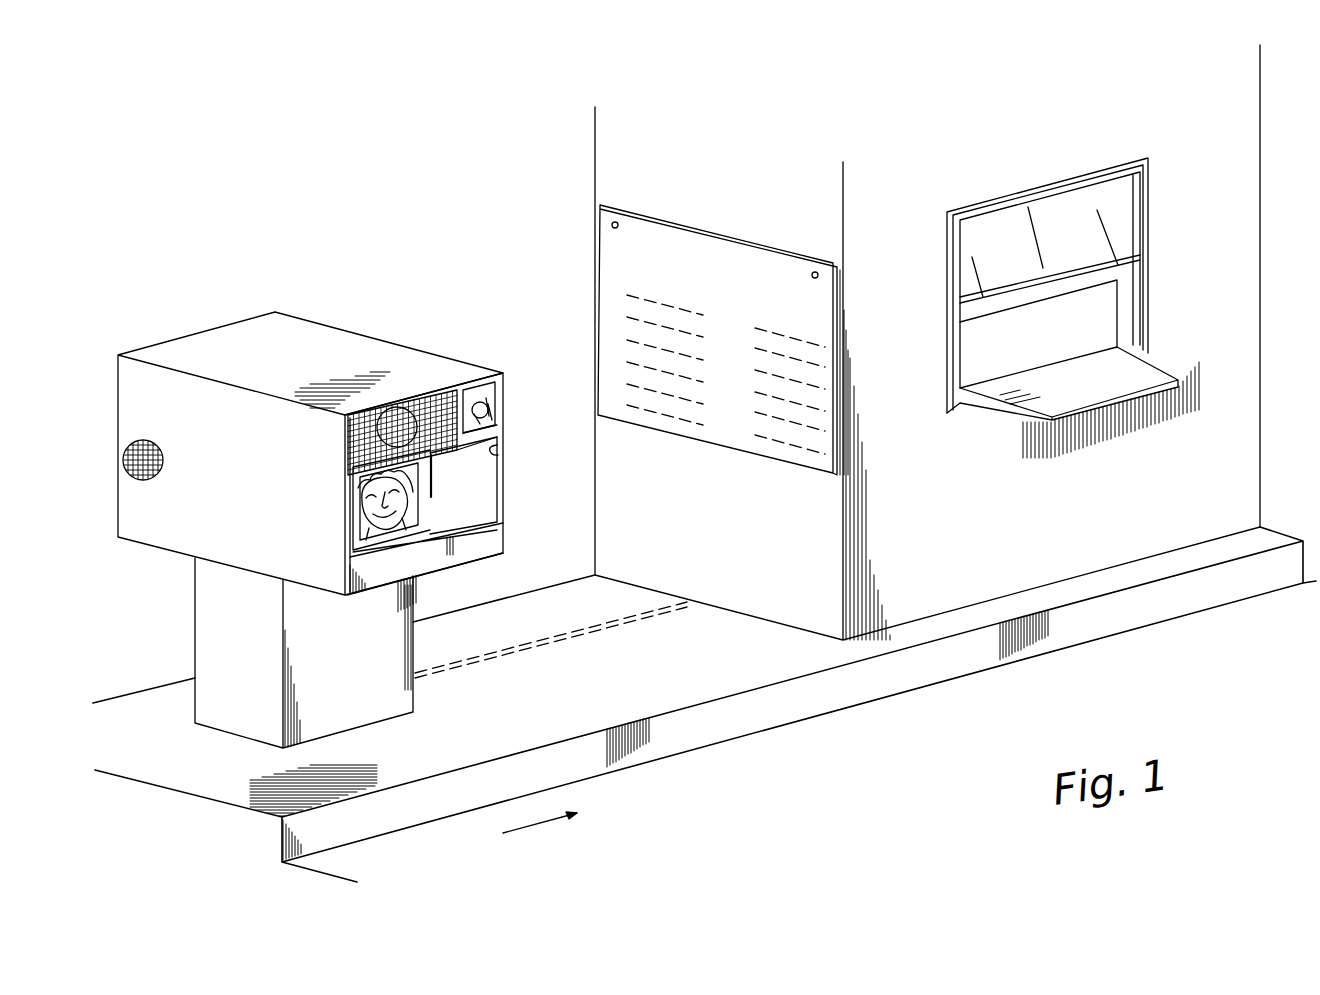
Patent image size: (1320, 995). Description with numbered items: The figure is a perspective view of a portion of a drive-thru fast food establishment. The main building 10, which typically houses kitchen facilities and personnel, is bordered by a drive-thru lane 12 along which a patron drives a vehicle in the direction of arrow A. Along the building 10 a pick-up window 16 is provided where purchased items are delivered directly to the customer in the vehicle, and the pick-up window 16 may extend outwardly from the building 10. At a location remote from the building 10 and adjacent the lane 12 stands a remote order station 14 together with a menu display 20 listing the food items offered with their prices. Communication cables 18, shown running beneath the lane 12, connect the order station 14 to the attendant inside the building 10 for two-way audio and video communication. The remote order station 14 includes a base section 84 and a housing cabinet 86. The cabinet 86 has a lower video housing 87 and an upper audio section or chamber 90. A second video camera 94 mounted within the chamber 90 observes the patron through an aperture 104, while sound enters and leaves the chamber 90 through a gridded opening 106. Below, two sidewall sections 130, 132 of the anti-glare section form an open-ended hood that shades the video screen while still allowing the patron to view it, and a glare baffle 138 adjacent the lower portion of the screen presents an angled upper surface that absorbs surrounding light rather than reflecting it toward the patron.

The main building 10 is at (589, 160).
The drive-thru lane 12 is at (1198, 657).
The remote order station 14 is at (345, 530).
The pick-up window 16 is at (1077, 227).
The communication cables 18 is at (577, 630).
The menu display 20 is at (607, 248).
The base section 84 is at (215, 647).
The housing cabinet 86 is at (345, 453).
The lower video housing 87 is at (473, 475).
The upper audio section 90 is at (494, 382).
The second video camera 94 is at (498, 403).
The aperture 104 is at (484, 440).
The gridded opening 106 is at (347, 447).
The sidewall section 130 is at (353, 535).
The sidewall section 132 is at (500, 450).
The glare baffle 138 is at (488, 538).